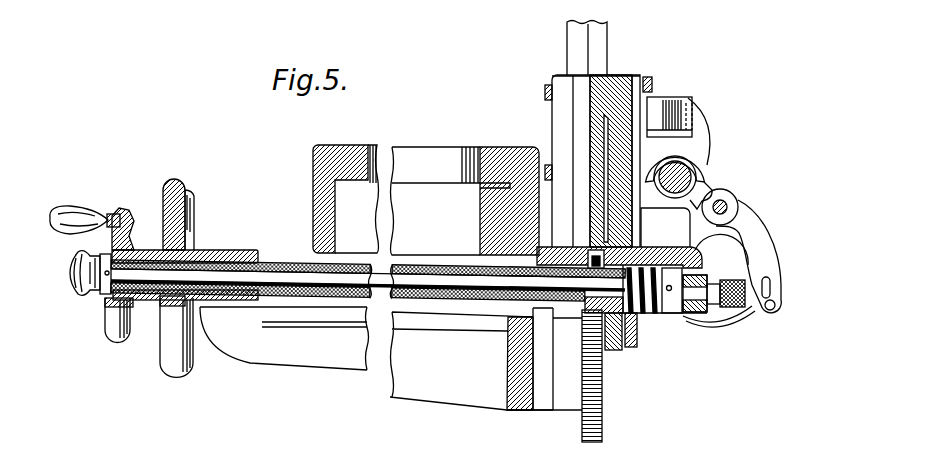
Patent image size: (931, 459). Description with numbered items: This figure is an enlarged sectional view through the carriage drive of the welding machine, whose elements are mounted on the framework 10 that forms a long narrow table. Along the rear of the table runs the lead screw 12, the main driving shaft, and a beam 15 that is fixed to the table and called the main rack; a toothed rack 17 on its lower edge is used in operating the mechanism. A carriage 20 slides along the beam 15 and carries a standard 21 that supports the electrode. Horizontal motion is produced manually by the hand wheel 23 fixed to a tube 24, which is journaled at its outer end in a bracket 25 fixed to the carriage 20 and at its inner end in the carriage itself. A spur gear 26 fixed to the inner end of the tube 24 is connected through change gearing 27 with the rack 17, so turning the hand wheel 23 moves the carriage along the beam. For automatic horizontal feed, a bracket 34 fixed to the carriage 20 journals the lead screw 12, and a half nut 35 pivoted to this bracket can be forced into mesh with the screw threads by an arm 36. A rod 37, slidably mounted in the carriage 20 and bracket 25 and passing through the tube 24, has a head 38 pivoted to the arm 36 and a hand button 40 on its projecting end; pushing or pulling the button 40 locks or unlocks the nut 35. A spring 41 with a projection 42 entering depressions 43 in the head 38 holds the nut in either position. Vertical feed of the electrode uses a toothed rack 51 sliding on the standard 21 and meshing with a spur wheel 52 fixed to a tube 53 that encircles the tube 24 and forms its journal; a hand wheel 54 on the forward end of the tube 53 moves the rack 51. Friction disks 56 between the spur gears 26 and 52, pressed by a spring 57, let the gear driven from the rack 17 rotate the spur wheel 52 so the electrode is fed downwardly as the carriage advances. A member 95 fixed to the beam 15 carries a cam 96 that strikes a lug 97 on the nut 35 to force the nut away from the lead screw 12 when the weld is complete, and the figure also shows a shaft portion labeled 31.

The framework 10 is at (330, 145).
The lead screw 12 is at (703, 167).
The beam 15 is at (590, 147).
The toothed rack 17 is at (641, 236).
The carriage 20 is at (620, 73).
The standard 21 is at (567, 50).
The hand wheel 23 is at (113, 330).
The tube 24 is at (133, 297).
The bracket 25 is at (457, 393).
The spur gear 26 is at (728, 200).
The change gearing 27 is at (632, 347).
The feed screw 31 is at (143, 273).
The bracket 34 is at (697, 208).
The half nut 35 is at (697, 172).
The arm 36 is at (767, 258).
The rod 37 is at (707, 298).
The head 38 is at (772, 286).
The hand button 40 is at (72, 283).
The spring 41 is at (745, 318).
The projection 42 is at (757, 313).
The depressions 43 is at (775, 306).
The toothed rack 51 is at (597, 43).
The spur wheel 52 is at (622, 347).
The tube 53 is at (553, 352).
The hand wheel 54 is at (180, 367).
The friction disks 56 is at (563, 250).
The spring 57 is at (647, 307).
The member 95 is at (665, 97).
The cam 96 is at (683, 102).
The lug 97 is at (693, 133).